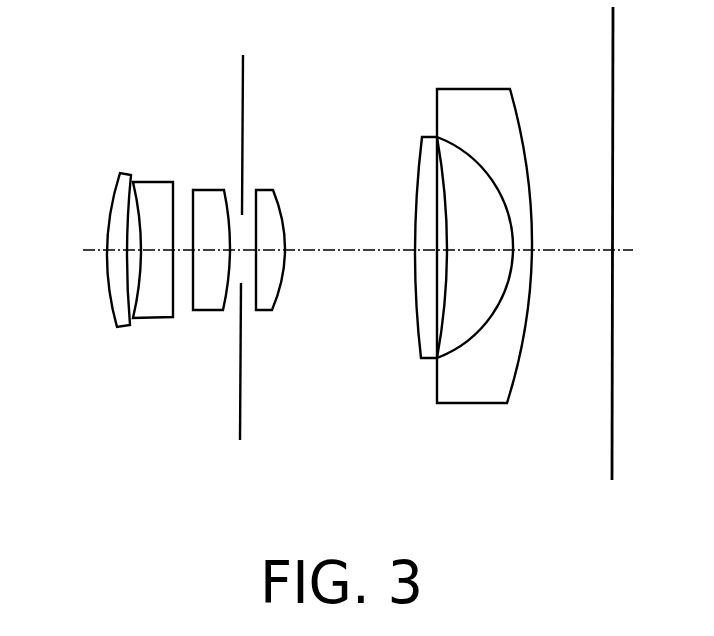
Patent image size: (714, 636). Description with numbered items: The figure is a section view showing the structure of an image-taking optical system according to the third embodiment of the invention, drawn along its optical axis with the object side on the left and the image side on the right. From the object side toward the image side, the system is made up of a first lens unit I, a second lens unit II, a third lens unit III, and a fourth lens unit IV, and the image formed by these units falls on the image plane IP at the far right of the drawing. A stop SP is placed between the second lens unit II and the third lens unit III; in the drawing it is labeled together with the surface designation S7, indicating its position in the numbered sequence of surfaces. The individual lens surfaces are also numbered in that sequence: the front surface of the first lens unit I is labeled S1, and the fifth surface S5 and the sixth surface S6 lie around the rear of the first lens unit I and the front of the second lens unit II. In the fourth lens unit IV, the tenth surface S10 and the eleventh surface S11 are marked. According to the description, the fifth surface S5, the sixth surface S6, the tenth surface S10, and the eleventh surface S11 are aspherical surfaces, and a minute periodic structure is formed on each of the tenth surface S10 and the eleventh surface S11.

The first lens surface (object side surface of first lens) S1 is at (115, 187).
The fifth surface S5 is at (180, 190).
The sixth surface S6 is at (186, 195).
The stop SP is at (180, 233).
The seventh surface (aperture stop) S7 is at (243, 85).
The 10th surface S10 is at (411, 192).
The 11th surface S11 is at (441, 173).
The image plane IP is at (612, 57).
The first lens unit I is at (116, 252).
The second lens unit II is at (208, 253).
The third lens unit III is at (260, 312).
The fourth lens unit IV is at (431, 255).